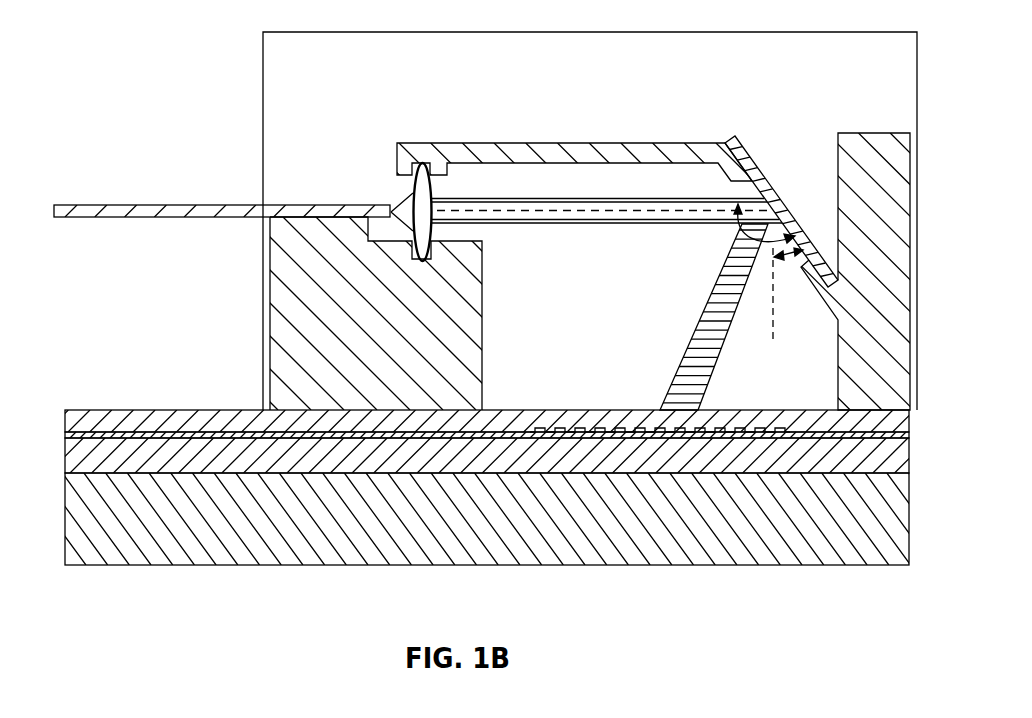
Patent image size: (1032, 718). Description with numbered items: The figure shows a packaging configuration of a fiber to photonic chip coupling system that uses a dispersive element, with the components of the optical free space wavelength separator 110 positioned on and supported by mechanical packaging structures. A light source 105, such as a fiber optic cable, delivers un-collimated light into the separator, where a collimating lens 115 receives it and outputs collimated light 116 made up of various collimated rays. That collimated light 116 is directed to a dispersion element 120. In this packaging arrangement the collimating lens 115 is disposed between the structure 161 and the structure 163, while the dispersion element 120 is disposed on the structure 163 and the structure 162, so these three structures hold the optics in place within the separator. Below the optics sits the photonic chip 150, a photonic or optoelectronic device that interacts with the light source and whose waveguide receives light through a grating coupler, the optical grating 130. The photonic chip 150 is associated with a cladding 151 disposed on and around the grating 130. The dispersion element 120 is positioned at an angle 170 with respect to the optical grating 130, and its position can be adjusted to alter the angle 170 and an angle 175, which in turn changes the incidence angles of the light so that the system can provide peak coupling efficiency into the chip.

The light source 105 is at (83, 205).
The optical free space wavelength separator 110 is at (870, 32).
The collimating lens 115 is at (412, 188).
The collimated light 116 is at (544, 224).
The dispersion element 120 is at (761, 168).
The optical grating 130 is at (587, 430).
The photonic chip 150 is at (860, 567).
The cladding 151 is at (97, 410).
The structure 161 is at (270, 324).
The structure 162 is at (873, 133).
The structure 163 is at (465, 143).
The angle 170 is at (804, 251).
The angle 175 is at (750, 240).